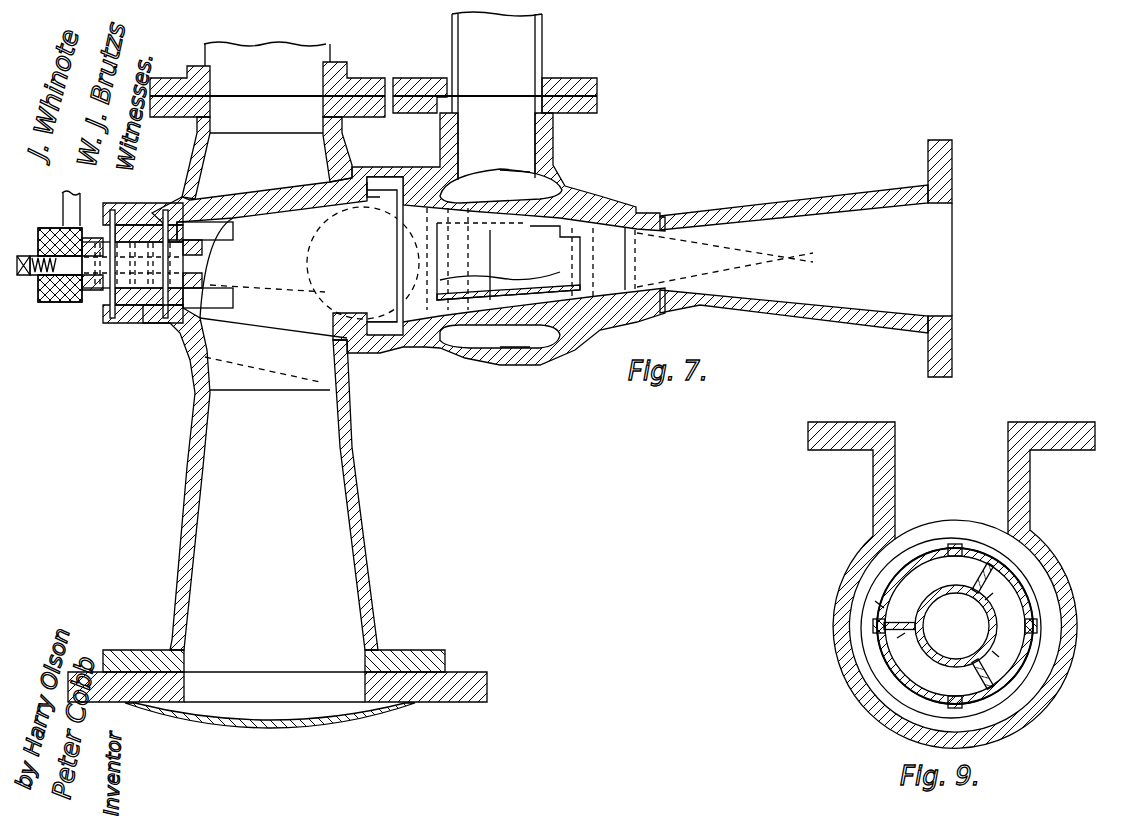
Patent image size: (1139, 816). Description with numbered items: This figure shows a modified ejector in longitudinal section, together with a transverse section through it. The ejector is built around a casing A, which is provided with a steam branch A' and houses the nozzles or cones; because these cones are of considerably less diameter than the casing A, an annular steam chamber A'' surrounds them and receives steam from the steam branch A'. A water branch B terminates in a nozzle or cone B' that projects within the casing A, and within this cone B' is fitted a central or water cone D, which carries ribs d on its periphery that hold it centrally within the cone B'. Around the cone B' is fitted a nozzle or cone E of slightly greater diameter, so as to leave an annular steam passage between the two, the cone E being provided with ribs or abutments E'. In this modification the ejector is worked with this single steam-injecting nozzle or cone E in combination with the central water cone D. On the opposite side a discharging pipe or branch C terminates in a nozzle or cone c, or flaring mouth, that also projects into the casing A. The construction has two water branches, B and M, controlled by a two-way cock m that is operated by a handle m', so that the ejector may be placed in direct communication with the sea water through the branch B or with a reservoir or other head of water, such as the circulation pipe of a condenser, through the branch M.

In FIG. 7, the water branch M is at (267, 120).
In FIG. 7, the casing A is at (499, 339).
In FIG. 9, the casing A is at (949, 628).
In FIG. 7, the steam branch A' is at (495, 96).
In FIG. 9, the steam branch A' is at (951, 585).
In FIG. 7, the annular steam chamber A'' is at (501, 186).
In FIG. 9, the annular steam chamber A'' is at (955, 616).
In FIG. 7, the water branch B is at (277, 516).
In FIG. 9, the water branch B is at (956, 626).
In FIG. 7, the nozzle or cone B' is at (500, 265).
In FIG. 9, the nozzle or cone B' is at (873, 597).
In FIG. 7, the nozzle or cone c is at (515, 258).
In FIG. 7, the ribs d is at (482, 222).
In FIG. 9, the ribs d is at (947, 626).
In FIG. 7, the cone D is at (531, 259).
In FIG. 9, the cone D is at (949, 626).
In FIG. 7, the discharging pipe or branch C is at (794, 258).
In FIG. 7, the two-way cock m is at (309, 294).
In FIG. 7, the handle m' is at (58, 208).
In FIG. 9, the nozzle or cone E is at (955, 637).
In FIG. 9, the ribs or abutments E' is at (963, 623).